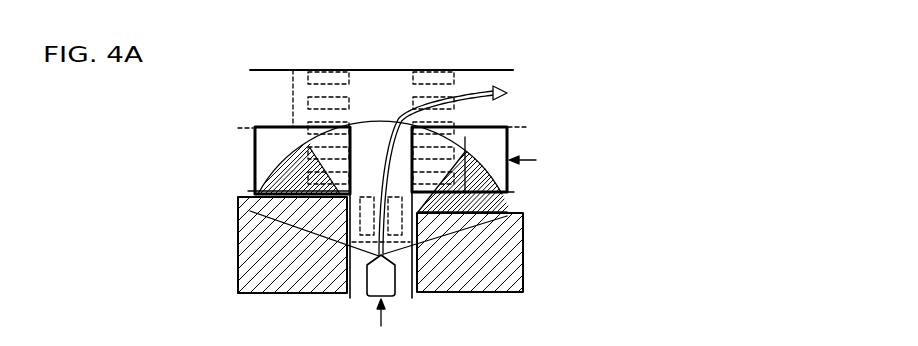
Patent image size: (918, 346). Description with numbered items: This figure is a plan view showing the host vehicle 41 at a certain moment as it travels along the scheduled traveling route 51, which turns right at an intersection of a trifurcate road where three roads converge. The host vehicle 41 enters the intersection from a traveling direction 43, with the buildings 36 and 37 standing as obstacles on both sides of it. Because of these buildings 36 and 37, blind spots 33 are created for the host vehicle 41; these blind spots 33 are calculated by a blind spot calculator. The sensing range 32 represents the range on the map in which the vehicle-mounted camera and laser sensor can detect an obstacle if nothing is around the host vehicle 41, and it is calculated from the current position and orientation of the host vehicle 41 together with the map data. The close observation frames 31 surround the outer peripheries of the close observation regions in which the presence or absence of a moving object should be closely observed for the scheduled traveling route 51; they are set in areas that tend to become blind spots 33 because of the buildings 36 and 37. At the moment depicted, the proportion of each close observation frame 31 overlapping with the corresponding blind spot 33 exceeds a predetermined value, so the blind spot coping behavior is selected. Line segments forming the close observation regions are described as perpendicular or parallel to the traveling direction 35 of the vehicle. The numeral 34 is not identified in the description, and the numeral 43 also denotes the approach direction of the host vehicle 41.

The close observation frame 31 is at (253, 141).
The sensing range 32 is at (382, 118).
The blind spot 33 is at (270, 184).
The substrate surface 34 is at (360, 151).
The traveling direction 35 is at (536, 162).
The building 36 is at (523, 250).
The building 37 is at (238, 250).
The host vehicle 41 is at (393, 298).
The traveling direction 43 is at (378, 318).
The scheduled traveling route 51 is at (477, 90).